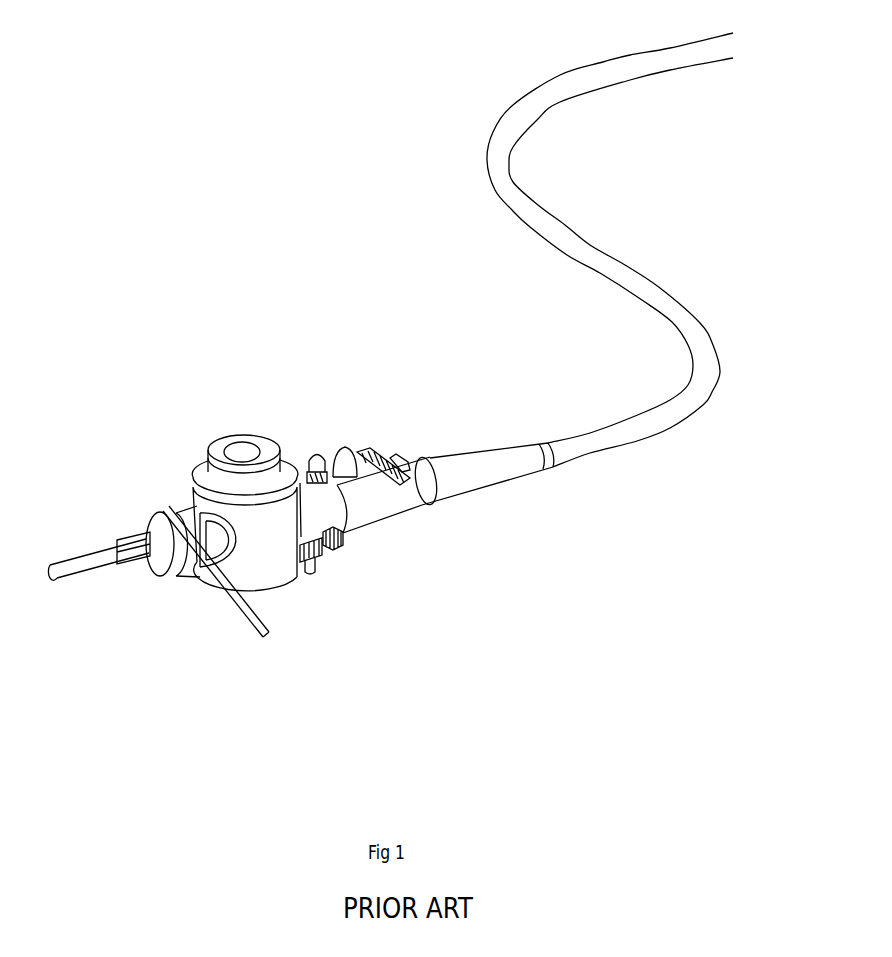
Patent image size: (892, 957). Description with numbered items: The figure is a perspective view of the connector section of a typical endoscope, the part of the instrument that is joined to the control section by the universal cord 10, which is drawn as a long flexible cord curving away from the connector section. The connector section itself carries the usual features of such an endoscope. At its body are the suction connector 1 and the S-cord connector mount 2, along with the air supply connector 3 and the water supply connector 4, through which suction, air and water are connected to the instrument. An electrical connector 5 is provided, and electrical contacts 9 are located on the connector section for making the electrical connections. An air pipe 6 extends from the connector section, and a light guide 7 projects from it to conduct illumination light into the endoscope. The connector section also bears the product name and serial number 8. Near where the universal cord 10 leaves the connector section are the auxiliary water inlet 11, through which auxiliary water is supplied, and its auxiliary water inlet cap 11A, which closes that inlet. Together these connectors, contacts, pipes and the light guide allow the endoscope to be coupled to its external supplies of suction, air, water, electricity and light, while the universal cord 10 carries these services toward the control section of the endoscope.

The suction connector 1 is at (307, 452).
The S-cord connector mount 2 is at (347, 541).
The air supply connector 3 is at (323, 550).
The water supply connector 4 is at (319, 572).
The electrical connector 5 is at (232, 440).
The air pipe 6 is at (130, 547).
The light guide 7 is at (84, 572).
The product name and serial number 8 is at (215, 550).
The electrical contacts 9 is at (264, 634).
The universal cord 10 is at (617, 78).
The auxiliary water inlet 11 is at (352, 447).
The auxiliary water inlet cap 11A is at (410, 455).